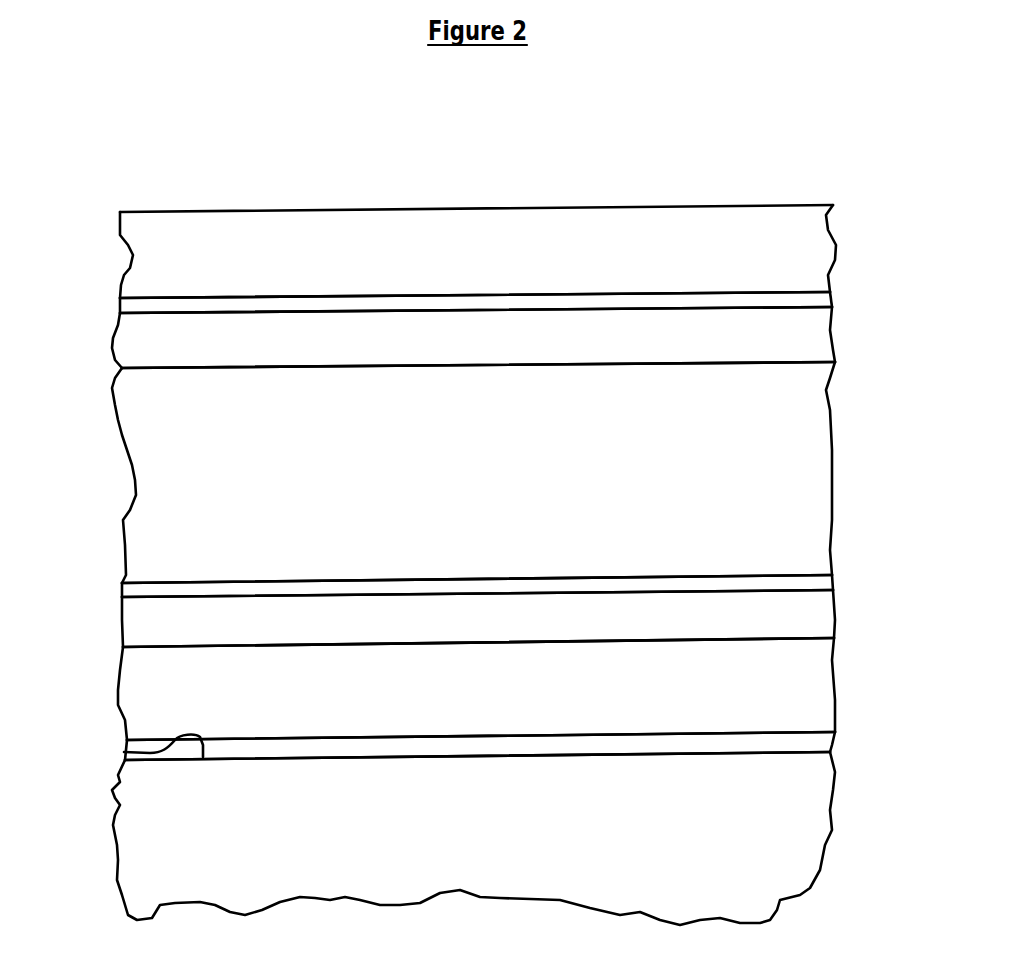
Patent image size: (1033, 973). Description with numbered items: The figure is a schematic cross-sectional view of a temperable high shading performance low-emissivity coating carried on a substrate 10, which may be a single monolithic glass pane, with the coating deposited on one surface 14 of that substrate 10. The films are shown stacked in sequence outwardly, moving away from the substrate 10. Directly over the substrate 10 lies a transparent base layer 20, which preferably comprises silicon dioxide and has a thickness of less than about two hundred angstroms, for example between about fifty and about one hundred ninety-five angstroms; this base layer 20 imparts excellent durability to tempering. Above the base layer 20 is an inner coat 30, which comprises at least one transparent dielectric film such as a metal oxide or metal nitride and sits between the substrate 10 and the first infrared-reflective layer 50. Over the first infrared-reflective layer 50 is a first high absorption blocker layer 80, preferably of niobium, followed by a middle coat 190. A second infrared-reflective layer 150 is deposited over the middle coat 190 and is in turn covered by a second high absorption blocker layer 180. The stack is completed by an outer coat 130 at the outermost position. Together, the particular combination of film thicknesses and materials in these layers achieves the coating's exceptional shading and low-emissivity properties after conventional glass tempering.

The substrate 10 is at (480, 840).
The surface 14 is at (124, 752).
The transparent base layer 20 is at (812, 742).
The inner coat 30 is at (490, 713).
The first infrared-reflective layer 50 is at (490, 631).
The first high absorption blocker layer 80 is at (834, 582).
The middle coat 190 is at (502, 497).
The second infrared-reflective layer 150 is at (502, 352).
The second high absorption blocker layer 180 is at (832, 297).
The outer coat 130 is at (502, 272).